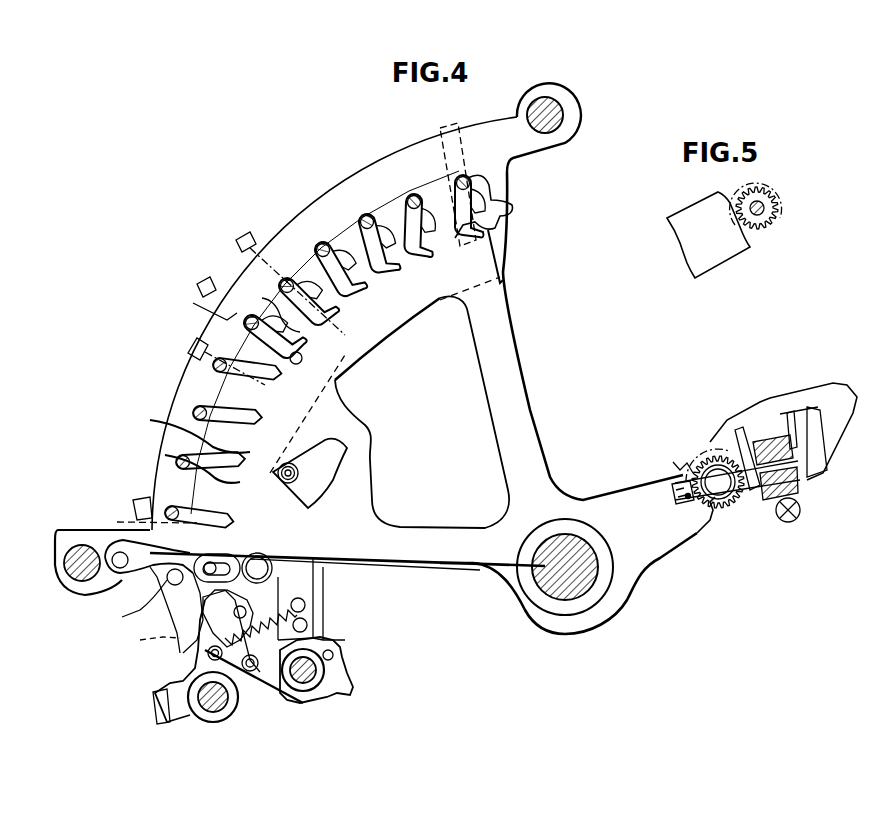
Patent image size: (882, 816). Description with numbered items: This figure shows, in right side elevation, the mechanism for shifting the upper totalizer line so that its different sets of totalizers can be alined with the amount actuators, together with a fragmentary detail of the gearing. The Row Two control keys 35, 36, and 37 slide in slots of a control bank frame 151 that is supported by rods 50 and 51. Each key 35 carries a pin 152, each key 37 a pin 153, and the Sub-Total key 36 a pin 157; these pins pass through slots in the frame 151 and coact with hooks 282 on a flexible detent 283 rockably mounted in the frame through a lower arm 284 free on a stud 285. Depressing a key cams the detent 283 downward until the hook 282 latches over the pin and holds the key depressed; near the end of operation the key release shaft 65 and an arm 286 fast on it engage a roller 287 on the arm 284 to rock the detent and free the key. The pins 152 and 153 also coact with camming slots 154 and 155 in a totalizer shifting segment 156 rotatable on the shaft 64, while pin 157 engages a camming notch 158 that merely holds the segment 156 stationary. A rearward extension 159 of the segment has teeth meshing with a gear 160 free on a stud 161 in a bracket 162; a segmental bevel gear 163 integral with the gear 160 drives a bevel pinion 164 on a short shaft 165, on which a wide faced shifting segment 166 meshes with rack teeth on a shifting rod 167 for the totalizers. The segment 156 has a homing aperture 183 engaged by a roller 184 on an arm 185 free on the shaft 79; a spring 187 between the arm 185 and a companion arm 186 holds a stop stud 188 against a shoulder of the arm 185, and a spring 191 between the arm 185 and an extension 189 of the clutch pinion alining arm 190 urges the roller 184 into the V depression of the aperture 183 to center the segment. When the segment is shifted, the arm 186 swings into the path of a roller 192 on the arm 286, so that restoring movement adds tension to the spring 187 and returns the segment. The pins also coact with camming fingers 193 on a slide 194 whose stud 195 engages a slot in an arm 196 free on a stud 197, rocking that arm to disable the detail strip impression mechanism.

In FIG. 4, the Row 2 control key 35 is at (455, 128).
In FIG. 4, the Sub-Total key 36 is at (203, 283).
In FIG. 4, the clerk's key 37 is at (190, 345).
In FIG. 4, the rod 50 is at (548, 100).
In FIG. 4, the rod 51 is at (68, 556).
In FIG. 4, the shaft 64 is at (590, 545).
In FIG. 4, the key release shaft 65 is at (222, 715).
In FIG. 4, the shaft 79 is at (312, 682).
In FIG. 4, the control bank frame 151 is at (388, 165).
In FIG. 4, the pin 152 is at (467, 177).
In FIG. 4, the pin 153 is at (213, 368).
In FIG. 4, the camming slot 154 is at (487, 235).
In FIG. 4, the camming slot 155 is at (302, 355).
In FIG. 4, the No. 2 totalizer shifting segment 156 is at (504, 318).
In FIG. 4, the pin 157 is at (220, 310).
In FIG. 4, the camming notch 158 is at (275, 305).
In FIG. 4, the rearward extension 159 is at (700, 545).
In FIG. 5, the rearward extension 159 is at (732, 250).
In FIG. 5, the gear 160 is at (777, 218).
In FIG. 5, the stud 161 is at (763, 205).
In FIG. 4, the bracket 162 is at (826, 384).
In FIG. 4, the segmental bevel gear 163 is at (720, 448).
In FIG. 4, the bevel pinion 164 is at (673, 462).
In FIG. 4, the short shaft 165 is at (733, 505).
In FIG. 4, the wide faced shifting segment 166 is at (797, 487).
In FIG. 4, the shifting rod 167 is at (800, 514).
In FIG. 4, the homing aperture 183 is at (325, 440).
In FIG. 4, the roller 184 is at (308, 508).
In FIG. 4, the arm 185 is at (312, 565).
In FIG. 4, the companion arm 186 is at (207, 655).
In FIG. 4, the spring 187 is at (313, 605).
In FIG. 4, the stop stud 188 is at (250, 690).
In FIG. 4, the extension 189 is at (173, 677).
In FIG. 4, the clutch pinion alining arm 190 is at (345, 665).
In FIG. 4, the spring 191 is at (318, 630).
In FIG. 4, the roller 192 is at (290, 607).
In FIG. 4, the camming fingers 193 is at (497, 187).
In FIG. 4, the slide 194 is at (505, 267).
In FIG. 4, the stud 195 is at (213, 568).
In FIG. 4, the arm 196 is at (122, 570).
In FIG. 4, the stud 197 is at (98, 590).
In FIG. 4, the hooks 282 is at (140, 520).
In FIG. 4, the Row 2 flexible detent 283 is at (270, 445).
In FIG. 4, the lower arm 284 is at (173, 603).
In FIG. 4, the stud 285 is at (128, 606).
In FIG. 4, the arm 286 is at (185, 722).
In FIG. 4, the roller 287 is at (144, 645).